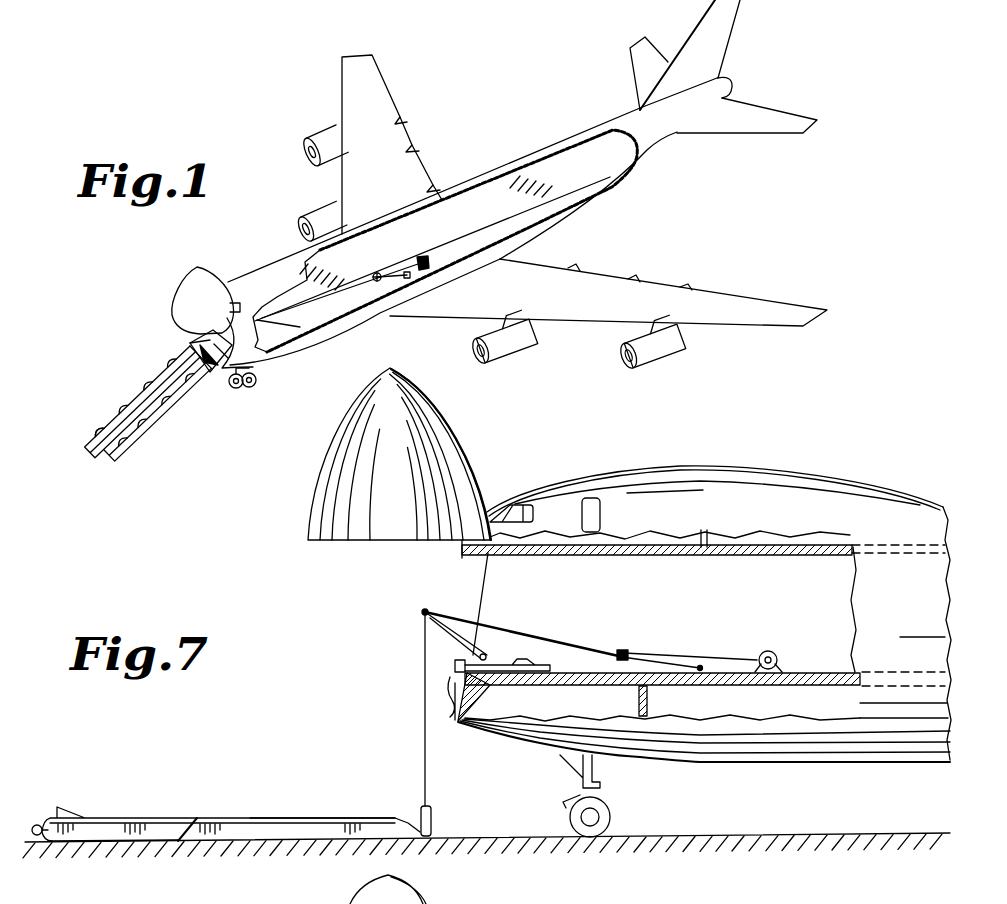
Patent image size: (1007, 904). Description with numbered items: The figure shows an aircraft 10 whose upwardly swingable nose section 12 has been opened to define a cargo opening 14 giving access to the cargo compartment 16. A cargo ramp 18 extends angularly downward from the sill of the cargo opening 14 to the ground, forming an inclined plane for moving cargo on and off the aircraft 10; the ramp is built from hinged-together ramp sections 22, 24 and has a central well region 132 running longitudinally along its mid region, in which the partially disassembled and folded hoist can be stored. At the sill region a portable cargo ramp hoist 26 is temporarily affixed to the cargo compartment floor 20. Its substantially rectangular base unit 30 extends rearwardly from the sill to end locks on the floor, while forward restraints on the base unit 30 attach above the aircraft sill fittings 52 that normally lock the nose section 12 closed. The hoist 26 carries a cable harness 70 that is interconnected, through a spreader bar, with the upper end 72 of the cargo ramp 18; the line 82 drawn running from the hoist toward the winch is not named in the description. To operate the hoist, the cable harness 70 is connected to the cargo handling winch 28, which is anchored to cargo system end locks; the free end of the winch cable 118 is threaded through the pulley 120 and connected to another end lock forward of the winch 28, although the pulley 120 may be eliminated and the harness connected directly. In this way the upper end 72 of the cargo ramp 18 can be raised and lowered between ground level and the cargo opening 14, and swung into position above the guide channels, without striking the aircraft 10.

In FIG. 1, the aircraft 10 is at (513, 163).
In FIG. 7, the aircraft 10 is at (690, 468).
In FIG. 1, the nose section 12 is at (200, 275).
In FIG. 7, the nose section 12 is at (468, 457).
In FIG. 1, the cargo opening 14 is at (187, 333).
In FIG. 7, the cargo opening 14 is at (500, 577).
In FIG. 1, the cargo compartment 16 is at (324, 262).
In FIG. 7, the cargo compartment 16 is at (838, 575).
In FIG. 1, the cargo ramp 18 is at (139, 425).
In FIG. 7, the cargo ramp 18 is at (226, 831).
In FIG. 1, the cargo compartment floor 20 is at (300, 327).
In FIG. 7, the cargo compartment floor 20 is at (808, 670).
In FIG. 1, the ramp section 22 is at (190, 393).
In FIG. 7, the ramp section 22 is at (263, 832).
In FIG. 1, the ramp section 24 is at (137, 447).
In FIG. 7, the ramp section 24 is at (118, 834).
In FIG. 1, the cargo ramp hoist 26 is at (227, 347).
In FIG. 7, the cargo ramp hoist 26 is at (443, 674).
In FIG. 1, the winch 28 is at (428, 263).
In FIG. 7, the winch 28 is at (770, 650).
In FIG. 7, the base unit 30 is at (510, 668).
In FIG. 7, the sill fitting 52 is at (456, 724).
In FIG. 7, the cable harness 70 is at (412, 665).
In FIG. 7, the upper end of the cargo ramp 72 is at (402, 834).
In FIG. 1, the cable 82 is at (306, 306).
In FIG. 7, the cable 82 is at (553, 637).
In FIG. 1, the winch cable 118 is at (400, 268).
In FIG. 7, the winch cable 118 is at (700, 655).
In FIG. 1, the pulley 120 is at (377, 277).
In FIG. 7, the pulley 120 is at (621, 653).
In FIG. 1, the central well region 132 is at (104, 462).